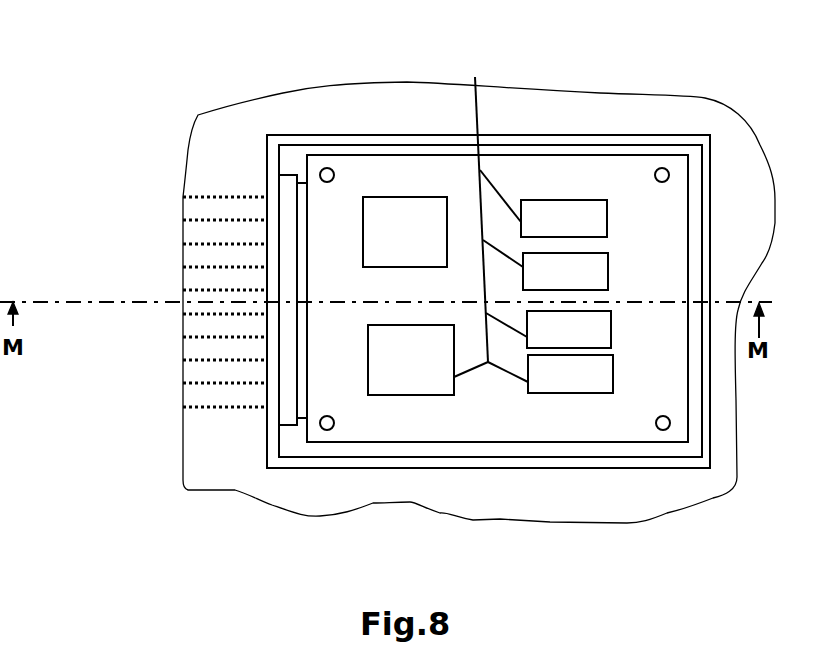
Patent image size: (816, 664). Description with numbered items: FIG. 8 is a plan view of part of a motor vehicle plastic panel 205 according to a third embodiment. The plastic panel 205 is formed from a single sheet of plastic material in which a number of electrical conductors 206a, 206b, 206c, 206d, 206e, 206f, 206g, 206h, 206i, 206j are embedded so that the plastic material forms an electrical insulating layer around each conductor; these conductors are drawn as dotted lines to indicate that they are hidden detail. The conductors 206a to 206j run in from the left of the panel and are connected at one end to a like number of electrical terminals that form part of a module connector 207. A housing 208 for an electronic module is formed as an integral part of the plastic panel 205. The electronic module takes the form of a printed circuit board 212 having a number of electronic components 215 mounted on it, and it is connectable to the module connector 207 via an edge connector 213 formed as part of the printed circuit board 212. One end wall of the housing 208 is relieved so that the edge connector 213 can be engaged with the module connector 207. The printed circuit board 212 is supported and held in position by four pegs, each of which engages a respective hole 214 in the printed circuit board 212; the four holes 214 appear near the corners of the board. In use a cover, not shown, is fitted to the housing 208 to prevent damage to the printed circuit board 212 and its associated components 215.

The plastic panel 205 is at (192, 114).
The electrical conductor 206a is at (183, 197).
The electrical conductor 206b is at (183, 220).
The electrical conductor 206c is at (182, 243).
The electrical conductor 206d is at (182, 267).
The electrical conductor 206e is at (183, 290).
The electrical conductor 206f is at (182, 313).
The electrical conductor 206g is at (182, 337).
The electrical conductor 206h is at (182, 360).
The electrical conductor 206i is at (182, 384).
The electrical conductor 206j is at (182, 408).
The module connector 207 is at (289, 175).
The housing 208 is at (583, 135).
The printed circuit board 212 is at (382, 153).
The edge connector 213 is at (303, 182).
The hole 214 is at (328, 167).
The electronic components 215 is at (422, 197).